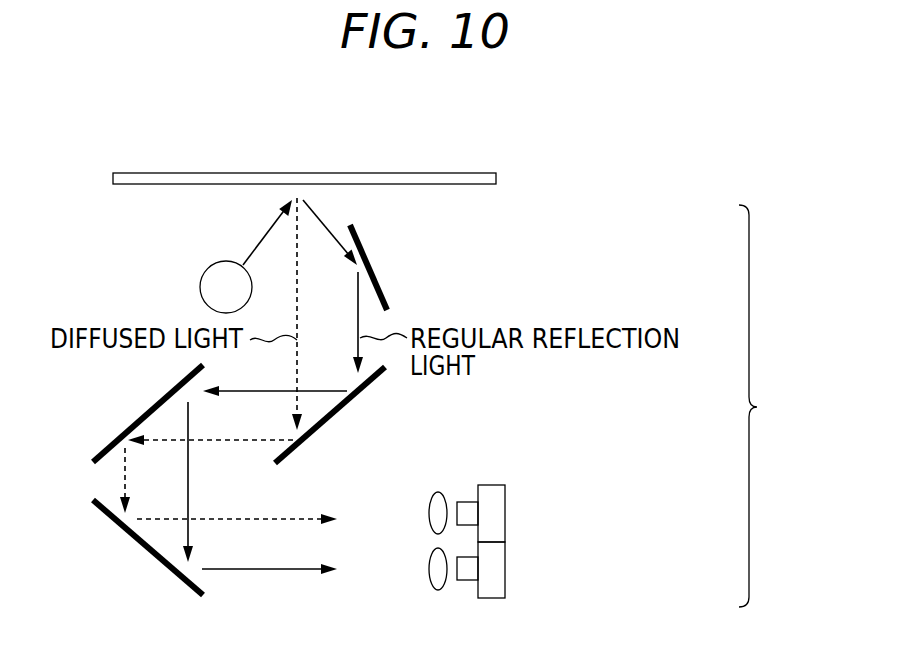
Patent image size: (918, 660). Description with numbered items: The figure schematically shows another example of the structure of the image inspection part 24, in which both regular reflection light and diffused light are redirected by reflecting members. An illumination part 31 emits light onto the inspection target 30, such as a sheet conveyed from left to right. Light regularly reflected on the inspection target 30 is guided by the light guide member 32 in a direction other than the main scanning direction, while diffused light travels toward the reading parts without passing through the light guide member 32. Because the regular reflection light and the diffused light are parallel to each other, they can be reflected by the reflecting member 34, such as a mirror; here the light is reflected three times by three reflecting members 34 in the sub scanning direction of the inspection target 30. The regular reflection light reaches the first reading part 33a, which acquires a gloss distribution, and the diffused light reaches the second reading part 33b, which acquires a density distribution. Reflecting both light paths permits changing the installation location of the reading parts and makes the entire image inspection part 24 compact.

The image inspection part 24 is at (765, 406).
The inspection target 30 is at (447, 180).
The illumination part 31 is at (212, 285).
The light guide member 32 is at (370, 263).
The first reading part 33a is at (495, 569).
The second reading part 33b is at (495, 513).
The reflecting member 34 is at (137, 420).